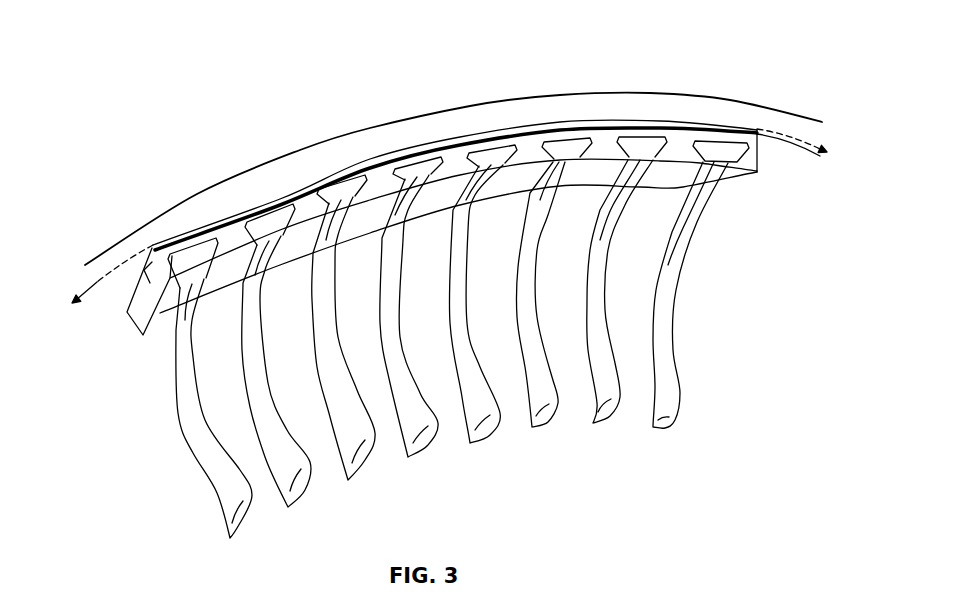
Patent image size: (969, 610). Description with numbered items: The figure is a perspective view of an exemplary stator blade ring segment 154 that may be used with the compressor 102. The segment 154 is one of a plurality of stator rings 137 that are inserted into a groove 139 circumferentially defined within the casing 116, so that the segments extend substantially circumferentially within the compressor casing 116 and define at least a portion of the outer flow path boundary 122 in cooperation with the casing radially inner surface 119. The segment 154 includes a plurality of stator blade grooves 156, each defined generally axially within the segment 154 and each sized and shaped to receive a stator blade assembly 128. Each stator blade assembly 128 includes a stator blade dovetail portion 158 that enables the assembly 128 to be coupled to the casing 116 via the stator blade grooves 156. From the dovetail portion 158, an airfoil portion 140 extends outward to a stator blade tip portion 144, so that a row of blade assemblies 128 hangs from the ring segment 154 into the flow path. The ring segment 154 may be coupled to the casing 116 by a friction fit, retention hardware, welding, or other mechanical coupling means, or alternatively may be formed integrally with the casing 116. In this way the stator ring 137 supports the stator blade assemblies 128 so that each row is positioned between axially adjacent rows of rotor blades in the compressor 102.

The compressor 102 is at (130, 84).
The casing 116 is at (312, 150).
The stator ring 137 is at (197, 193).
The groove 139 is at (74, 301).
The casing radially inner surface 119 is at (116, 278).
The stator blade groove 156 is at (718, 130).
The stator blade ring segment 154 is at (723, 153).
The stator blade dovetail portion 158 is at (724, 177).
The outer flow path boundary 122 is at (519, 188).
The airfoil portion 140 is at (703, 307).
The stator blade tip portion 144 is at (655, 425).
The stator blade assembly 128 is at (464, 349).